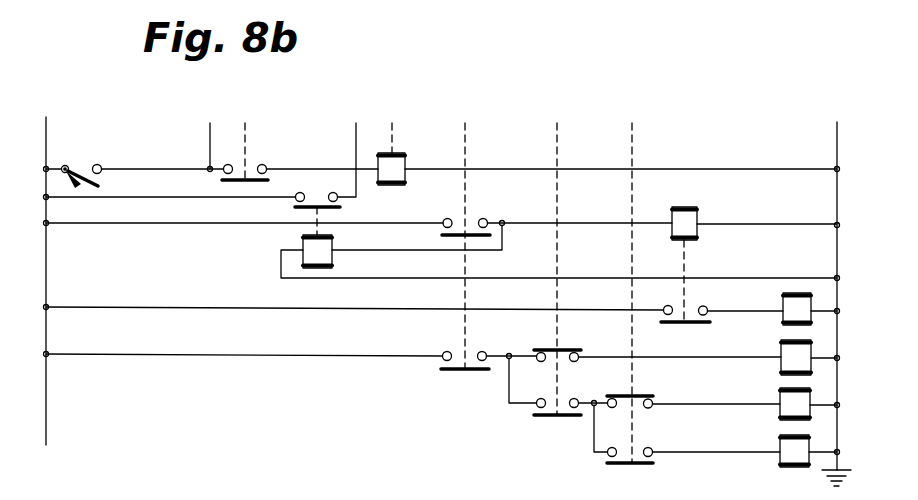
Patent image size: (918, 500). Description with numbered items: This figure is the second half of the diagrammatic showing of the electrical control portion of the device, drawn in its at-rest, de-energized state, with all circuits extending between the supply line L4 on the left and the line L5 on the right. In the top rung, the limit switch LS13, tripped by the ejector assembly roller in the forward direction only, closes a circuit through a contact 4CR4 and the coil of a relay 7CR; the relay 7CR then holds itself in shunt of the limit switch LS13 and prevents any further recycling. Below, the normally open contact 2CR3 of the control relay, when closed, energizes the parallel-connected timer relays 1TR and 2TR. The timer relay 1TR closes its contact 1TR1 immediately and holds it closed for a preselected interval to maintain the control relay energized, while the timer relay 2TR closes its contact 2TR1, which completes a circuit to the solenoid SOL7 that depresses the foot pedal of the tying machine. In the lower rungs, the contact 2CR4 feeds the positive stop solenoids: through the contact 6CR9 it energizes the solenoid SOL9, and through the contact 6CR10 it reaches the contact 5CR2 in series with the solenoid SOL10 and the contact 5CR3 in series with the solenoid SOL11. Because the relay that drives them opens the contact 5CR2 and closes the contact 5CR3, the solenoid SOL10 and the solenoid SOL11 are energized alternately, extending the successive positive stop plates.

The line L4 is at (40, 267).
The line L5 is at (833, 288).
The limit switch LS13 is at (82, 167).
The contact 4CR4 is at (250, 165).
The relay 7CR is at (406, 163).
The contact 1TR1 is at (295, 200).
The timer relay 1TR is at (302, 243).
The contact 2CR3 is at (472, 222).
The timer relay 2TR is at (700, 216).
The contact 2TR1 is at (690, 325).
The solenoid SOL7 is at (781, 300).
The solenoid SOL9 is at (780, 346).
The solenoid SOL10 is at (780, 394).
The solenoid SOL11 is at (780, 441).
The contact 2CR4 is at (458, 355).
The contact 6CR9 is at (545, 348).
The contact 6CR10 is at (535, 407).
The contact 5CR2 is at (622, 392).
The contact 5CR3 is at (605, 453).